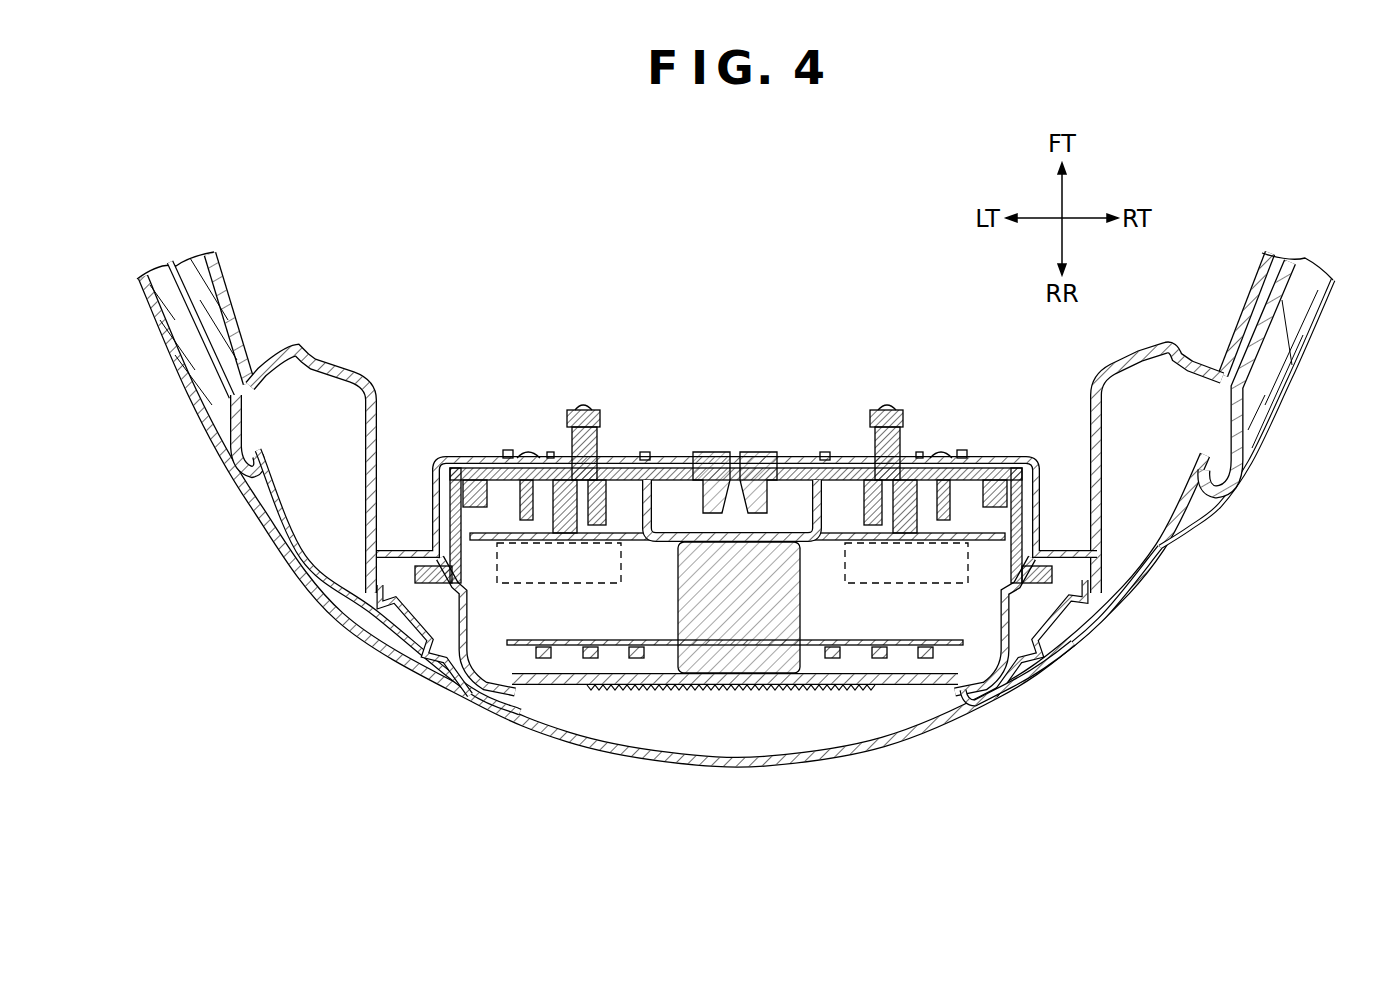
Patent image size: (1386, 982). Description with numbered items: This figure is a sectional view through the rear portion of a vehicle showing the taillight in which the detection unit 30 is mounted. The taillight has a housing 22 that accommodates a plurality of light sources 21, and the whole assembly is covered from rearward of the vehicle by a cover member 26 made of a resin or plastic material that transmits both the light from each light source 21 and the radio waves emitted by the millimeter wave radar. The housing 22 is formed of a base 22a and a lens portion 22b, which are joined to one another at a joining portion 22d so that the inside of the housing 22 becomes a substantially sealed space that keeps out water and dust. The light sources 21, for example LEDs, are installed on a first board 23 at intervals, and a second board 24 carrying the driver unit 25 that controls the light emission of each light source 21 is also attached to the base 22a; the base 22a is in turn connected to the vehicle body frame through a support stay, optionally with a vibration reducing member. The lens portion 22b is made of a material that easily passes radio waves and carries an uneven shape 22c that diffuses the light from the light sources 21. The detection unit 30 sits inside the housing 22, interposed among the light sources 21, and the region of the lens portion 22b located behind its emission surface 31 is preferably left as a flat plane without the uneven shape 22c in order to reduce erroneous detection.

The light source 21 is at (877, 658).
The housing 22 is at (693, 601).
The base 22a is at (457, 457).
The lens portion 22b is at (473, 703).
The uneven shape 22c is at (680, 687).
The joining portion 22d is at (410, 576).
The first board 23 is at (983, 693).
The second board 24 is at (972, 527).
The driver unit 25 is at (510, 586).
The cover member 26 is at (1023, 687).
The detection unit 30 is at (800, 612).
The emission surface 31 is at (743, 687).